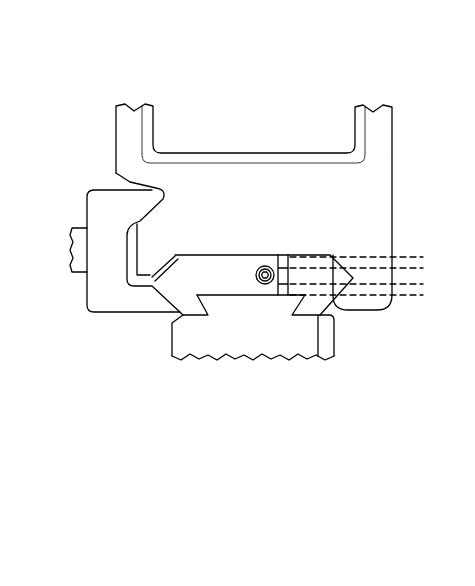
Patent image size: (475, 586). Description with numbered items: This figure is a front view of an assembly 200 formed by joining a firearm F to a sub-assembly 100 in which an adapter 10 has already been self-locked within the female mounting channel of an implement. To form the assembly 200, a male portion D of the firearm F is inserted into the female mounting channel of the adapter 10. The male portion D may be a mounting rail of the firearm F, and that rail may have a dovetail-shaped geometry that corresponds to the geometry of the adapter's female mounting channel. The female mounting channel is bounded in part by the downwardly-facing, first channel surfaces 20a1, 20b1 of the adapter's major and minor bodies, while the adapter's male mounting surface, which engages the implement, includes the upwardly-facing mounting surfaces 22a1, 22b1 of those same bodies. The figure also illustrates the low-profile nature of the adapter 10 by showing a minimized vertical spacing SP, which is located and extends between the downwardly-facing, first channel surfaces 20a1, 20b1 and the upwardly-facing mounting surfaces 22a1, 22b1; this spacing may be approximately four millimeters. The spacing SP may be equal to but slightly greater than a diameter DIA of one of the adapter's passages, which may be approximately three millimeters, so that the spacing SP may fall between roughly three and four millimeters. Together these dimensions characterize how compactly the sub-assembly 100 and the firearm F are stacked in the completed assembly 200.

The assembly 200 is at (55, 33).
The sub-assembly 100 is at (105, 25).
The adapter 10 is at (133, 92).
The firearm F is at (156, 344).
The upwardly-facing mounting surface 22a1 is at (225, 258).
The upwardly-facing mounting surface 22b1 is at (301, 257).
The downwardly-facing, first channel surface 20a1 is at (238, 294).
The downwardly-facing, first channel surface 20b1 is at (298, 294).
The male portion D is at (254, 312).
The diameter DIA is at (400, 212).
The vertical spacing SP is at (422, 310).